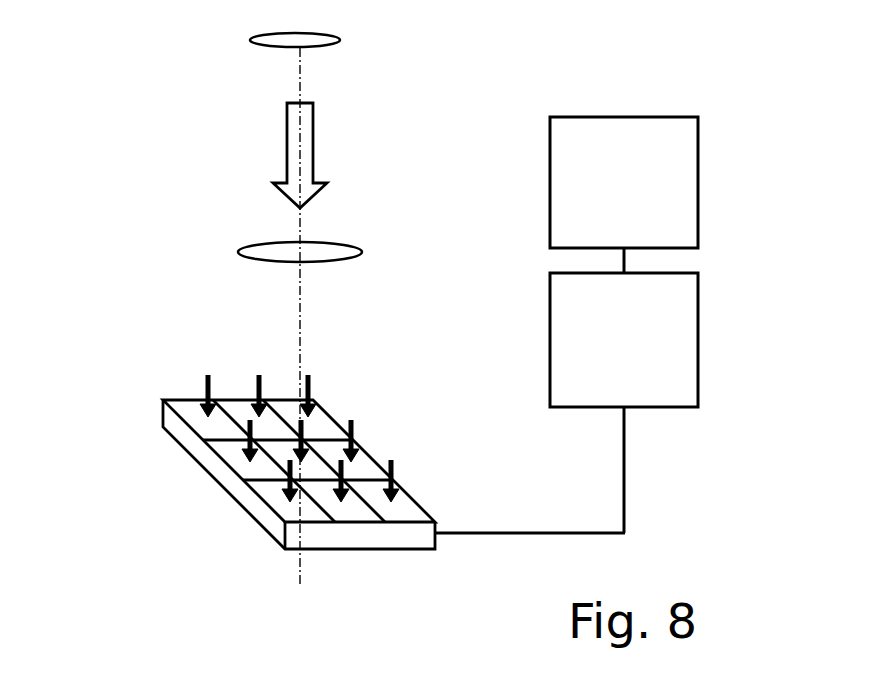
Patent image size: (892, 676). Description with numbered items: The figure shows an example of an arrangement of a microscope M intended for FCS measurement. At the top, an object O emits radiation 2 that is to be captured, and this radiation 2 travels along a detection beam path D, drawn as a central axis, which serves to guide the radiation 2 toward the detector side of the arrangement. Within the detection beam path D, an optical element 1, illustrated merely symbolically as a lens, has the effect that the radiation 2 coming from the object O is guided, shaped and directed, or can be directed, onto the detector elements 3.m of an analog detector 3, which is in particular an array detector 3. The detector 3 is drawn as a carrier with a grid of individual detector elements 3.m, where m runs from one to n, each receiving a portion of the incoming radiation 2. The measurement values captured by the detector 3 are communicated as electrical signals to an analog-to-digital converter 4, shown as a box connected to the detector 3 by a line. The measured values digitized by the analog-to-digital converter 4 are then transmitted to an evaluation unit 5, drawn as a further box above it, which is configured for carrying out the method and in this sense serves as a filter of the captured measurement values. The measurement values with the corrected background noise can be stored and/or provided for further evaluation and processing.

The microscope M is at (142, 76).
The detection beam path D is at (300, 56).
The object O is at (323, 46).
The radiation 2 is at (287, 138).
The optical element 1 is at (238, 253).
The detector 3 is at (232, 500).
The detector element 3.m is at (232, 447).
The analog-to-digital converter 4 is at (636, 364).
The evaluation unit 5 is at (636, 207).